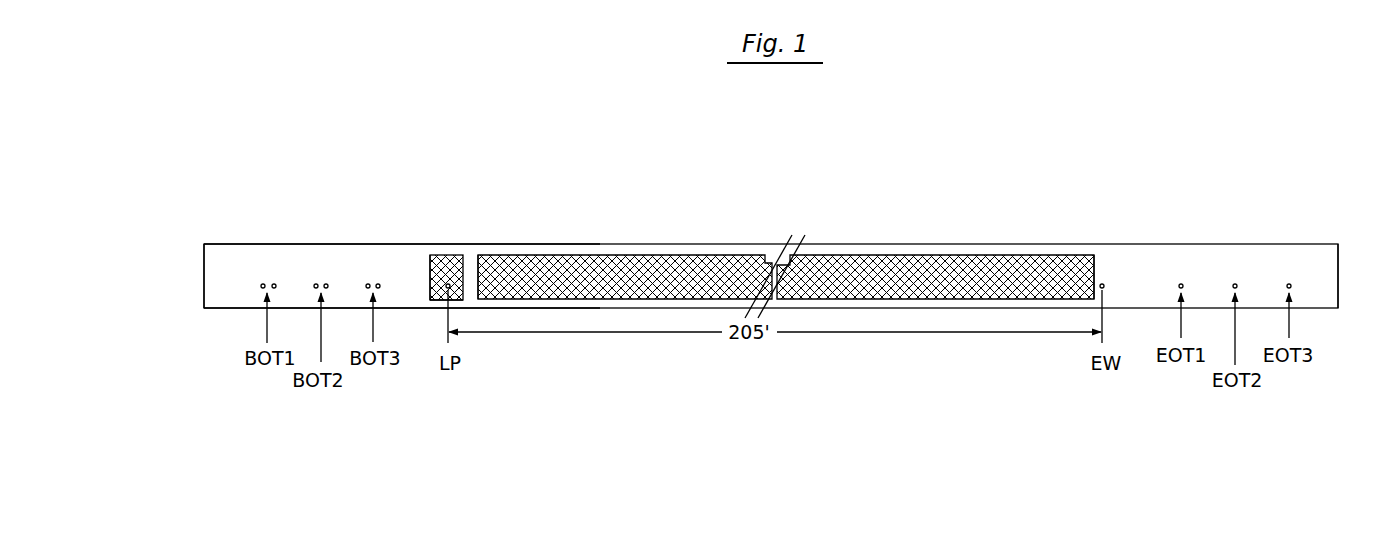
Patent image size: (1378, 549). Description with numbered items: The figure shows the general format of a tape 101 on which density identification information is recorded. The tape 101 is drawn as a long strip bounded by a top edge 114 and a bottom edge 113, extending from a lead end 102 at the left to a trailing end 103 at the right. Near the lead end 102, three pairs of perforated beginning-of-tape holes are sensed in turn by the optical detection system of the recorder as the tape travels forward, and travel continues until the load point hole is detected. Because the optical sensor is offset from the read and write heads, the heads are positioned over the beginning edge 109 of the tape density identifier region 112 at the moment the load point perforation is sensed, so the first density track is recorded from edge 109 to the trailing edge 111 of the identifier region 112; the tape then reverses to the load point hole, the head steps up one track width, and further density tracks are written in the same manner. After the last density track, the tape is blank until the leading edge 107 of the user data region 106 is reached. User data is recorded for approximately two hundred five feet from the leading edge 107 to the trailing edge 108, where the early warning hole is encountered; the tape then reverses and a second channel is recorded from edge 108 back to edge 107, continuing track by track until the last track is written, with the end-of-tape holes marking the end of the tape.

The tape 101 is at (290, 254).
The lead end 102 is at (203, 282).
The trailing end 103 is at (1338, 270).
The user data region 106 is at (610, 259).
The leading edge of user data region 107 is at (474, 258).
The trailing edge of user data region 108 is at (1100, 243).
The beginning edge of identifier region 109 is at (429, 285).
The trailing edge of identifier region 111 is at (465, 302).
The tape density identifier region 112 is at (438, 255).
The bottom edge 113 is at (230, 309).
The top edge 114 is at (227, 243).